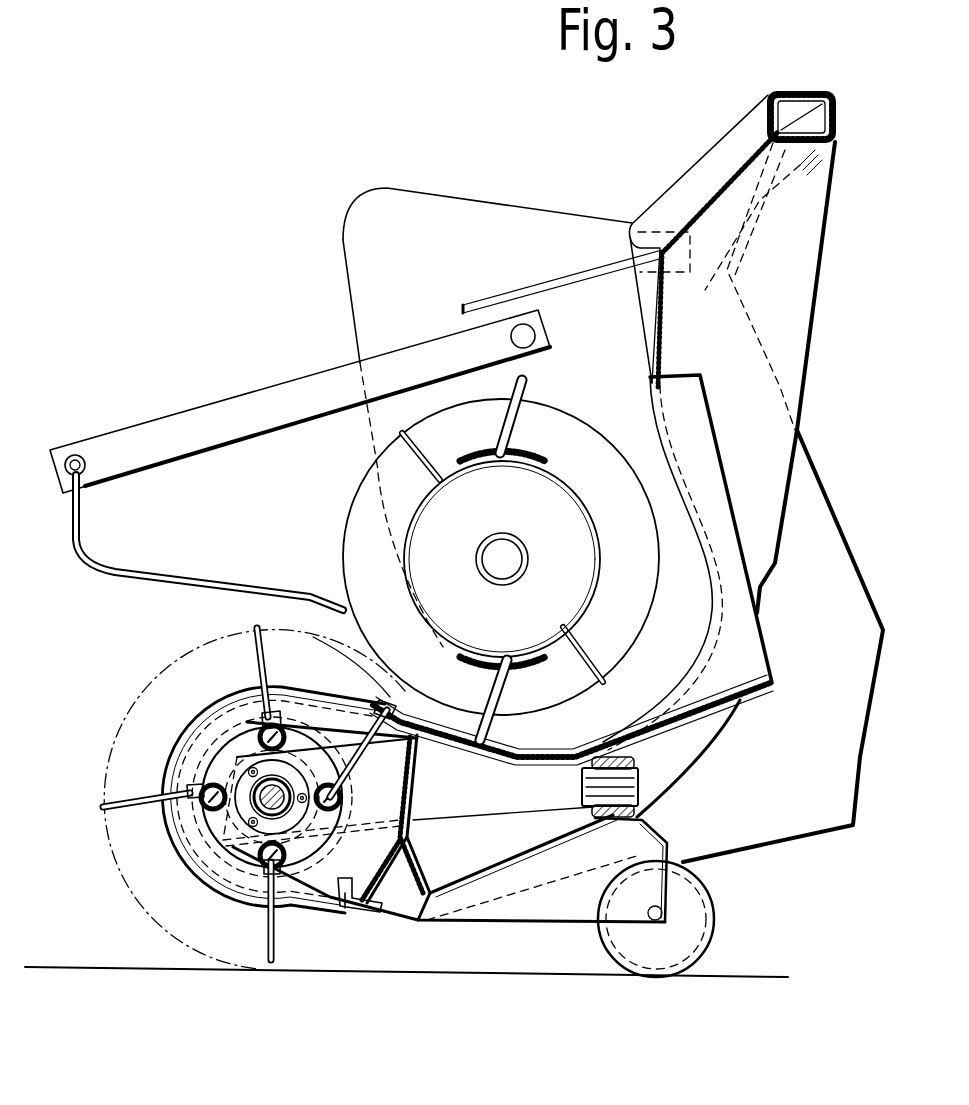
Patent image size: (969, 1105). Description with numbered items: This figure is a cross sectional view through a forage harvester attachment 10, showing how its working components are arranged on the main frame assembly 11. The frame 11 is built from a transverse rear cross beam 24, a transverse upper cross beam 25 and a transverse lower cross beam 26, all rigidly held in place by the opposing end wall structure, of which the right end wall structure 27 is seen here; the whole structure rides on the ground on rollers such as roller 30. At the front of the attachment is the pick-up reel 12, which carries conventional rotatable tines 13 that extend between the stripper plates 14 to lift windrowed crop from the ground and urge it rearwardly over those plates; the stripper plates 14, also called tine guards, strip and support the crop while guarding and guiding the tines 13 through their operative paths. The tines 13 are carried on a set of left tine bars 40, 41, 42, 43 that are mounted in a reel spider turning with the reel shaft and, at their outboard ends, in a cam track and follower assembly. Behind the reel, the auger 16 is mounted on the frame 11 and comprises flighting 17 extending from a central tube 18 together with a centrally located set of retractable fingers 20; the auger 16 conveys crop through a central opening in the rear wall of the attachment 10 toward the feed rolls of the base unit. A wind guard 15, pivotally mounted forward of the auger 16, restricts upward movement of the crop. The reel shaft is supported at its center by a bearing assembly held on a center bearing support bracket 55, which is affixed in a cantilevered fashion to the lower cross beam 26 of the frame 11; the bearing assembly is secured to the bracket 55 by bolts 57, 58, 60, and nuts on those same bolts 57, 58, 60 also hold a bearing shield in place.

The attachment 10 is at (246, 263).
The frame 11 is at (800, 90).
The pick-up reel 12 is at (153, 699).
The tines 13 is at (257, 645).
The stripper plates 14 is at (200, 737).
The wind guard 15 is at (194, 405).
The auger 16 is at (484, 400).
The flighting 17 is at (412, 440).
The tube 18 is at (590, 522).
The retractable fingers 20 is at (540, 396).
The rear cross beam 24 is at (643, 757).
The upper cross beam 25 is at (795, 150).
The lower cross beam 26 is at (437, 857).
The end wall structure 27 is at (405, 264).
The roller 30 is at (705, 885).
The left tine bar 40 is at (303, 688).
The left tine bar 41 is at (242, 753).
The left tine bar 42 is at (205, 765).
The left tine bar 43 is at (253, 893).
The center bearing support bracket 55 is at (348, 853).
The bolt 57 is at (183, 733).
The bolt 58 is at (346, 805).
The bolt 60 is at (217, 857).